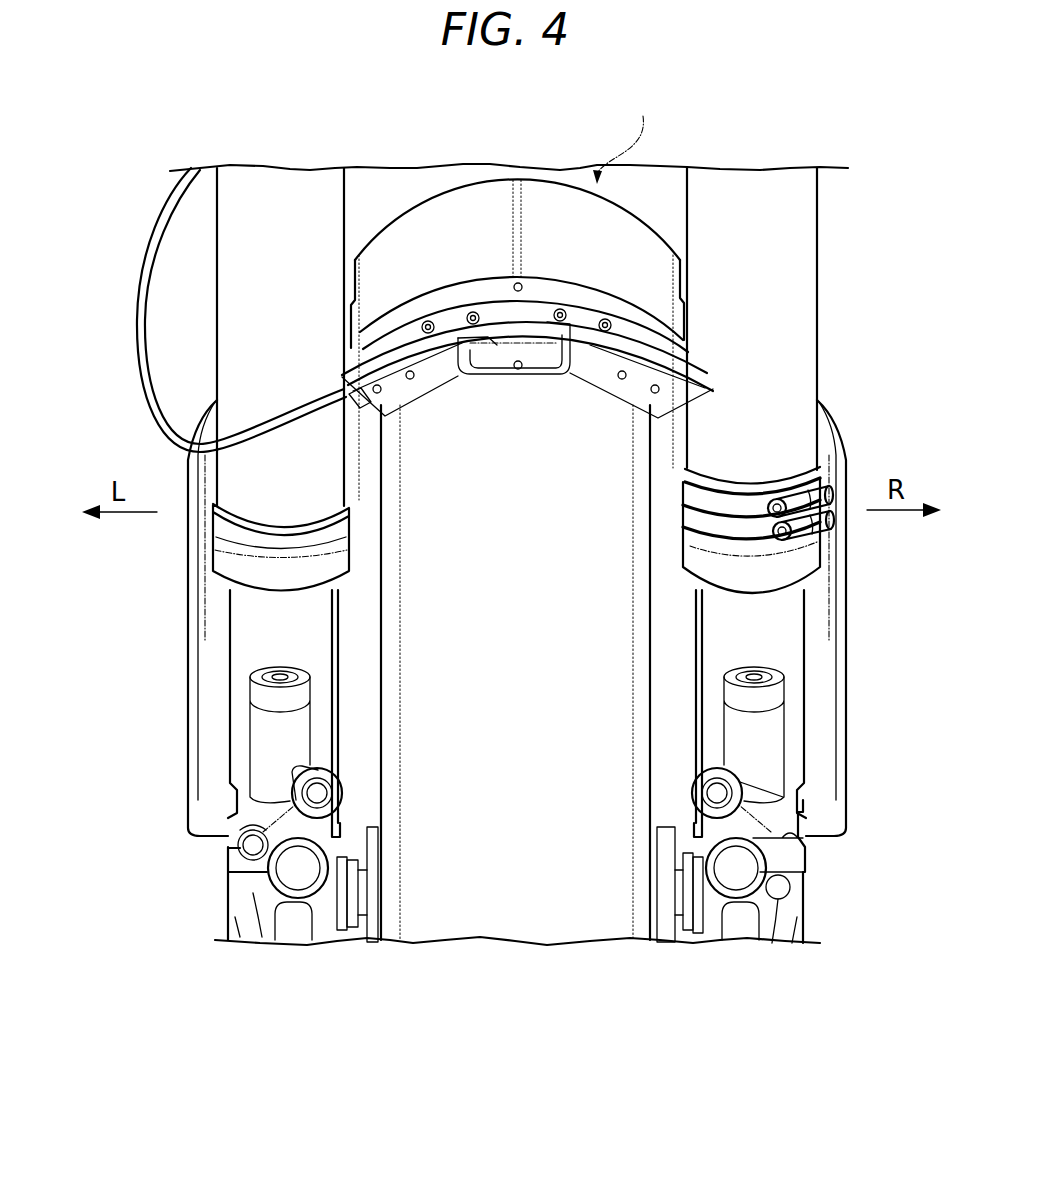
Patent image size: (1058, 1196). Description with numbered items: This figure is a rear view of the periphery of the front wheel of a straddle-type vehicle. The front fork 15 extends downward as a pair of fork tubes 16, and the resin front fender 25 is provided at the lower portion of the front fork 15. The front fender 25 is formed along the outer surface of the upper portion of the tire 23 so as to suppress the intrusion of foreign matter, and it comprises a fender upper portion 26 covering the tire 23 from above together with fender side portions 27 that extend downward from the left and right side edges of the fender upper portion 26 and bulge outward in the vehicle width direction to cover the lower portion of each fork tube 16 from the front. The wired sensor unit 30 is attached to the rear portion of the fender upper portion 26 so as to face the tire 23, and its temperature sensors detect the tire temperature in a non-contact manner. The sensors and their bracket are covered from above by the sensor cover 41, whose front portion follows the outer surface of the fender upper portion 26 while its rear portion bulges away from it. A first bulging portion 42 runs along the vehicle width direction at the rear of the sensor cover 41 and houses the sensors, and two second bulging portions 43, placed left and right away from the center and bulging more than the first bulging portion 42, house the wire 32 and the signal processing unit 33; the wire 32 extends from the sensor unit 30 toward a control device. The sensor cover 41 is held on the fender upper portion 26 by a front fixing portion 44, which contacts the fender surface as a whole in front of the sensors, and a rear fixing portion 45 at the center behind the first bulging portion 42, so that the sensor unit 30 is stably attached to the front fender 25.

The front fork 15 is at (850, 175).
The fork tube 16 is at (227, 276).
The tire 23 is at (590, 925).
The front fender 25 is at (626, 134).
The fender upper portion 26 is at (487, 178).
The fender side portion 27 is at (190, 558).
The sensor unit 30 is at (516, 274).
The wire 32 is at (140, 313).
The signal processing unit 33 is at (360, 410).
The sensor cover 41 is at (598, 307).
The first bulging portion 42 is at (512, 322).
The second bulging portion 43 is at (352, 334).
The front fixing portion 44 is at (520, 282).
The rear fixing portion 45 is at (520, 388).